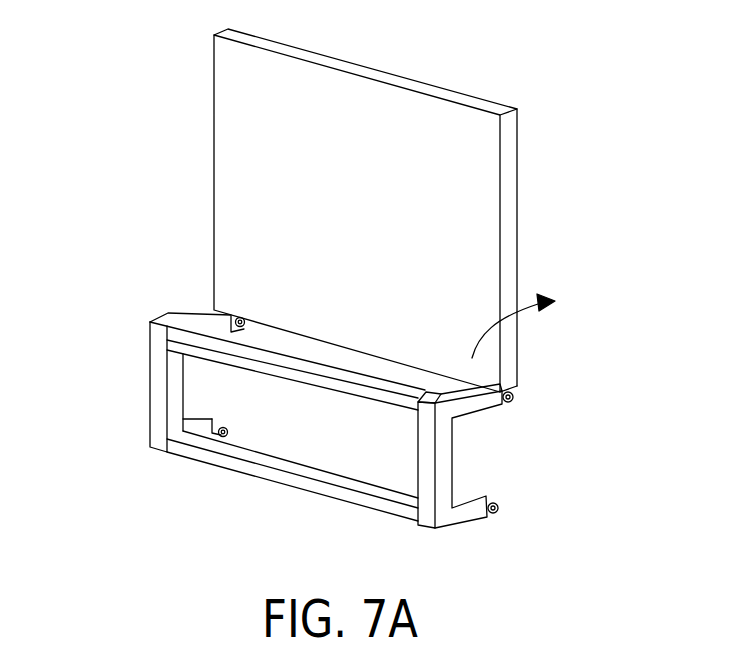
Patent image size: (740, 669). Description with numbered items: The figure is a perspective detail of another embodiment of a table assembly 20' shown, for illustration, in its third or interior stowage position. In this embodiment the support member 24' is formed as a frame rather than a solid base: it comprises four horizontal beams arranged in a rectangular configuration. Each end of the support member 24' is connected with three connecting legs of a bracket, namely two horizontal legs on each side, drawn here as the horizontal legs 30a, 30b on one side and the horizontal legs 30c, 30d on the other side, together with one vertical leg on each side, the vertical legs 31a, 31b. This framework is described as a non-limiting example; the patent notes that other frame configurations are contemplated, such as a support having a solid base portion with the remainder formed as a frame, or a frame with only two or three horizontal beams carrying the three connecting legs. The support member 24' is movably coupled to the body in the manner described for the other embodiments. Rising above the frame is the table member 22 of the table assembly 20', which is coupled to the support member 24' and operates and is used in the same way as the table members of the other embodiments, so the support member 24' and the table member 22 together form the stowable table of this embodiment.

The table assembly 20' is at (349, 301).
The table member 22 is at (257, 168).
The support member 24' is at (328, 414).
The horizontal leg 30a is at (478, 402).
The horizontal leg 30b is at (467, 512).
The horizontal leg 30c is at (198, 316).
The horizontal leg 30d is at (205, 433).
The vertical leg 31a is at (158, 416).
The vertical leg 31b is at (442, 467).